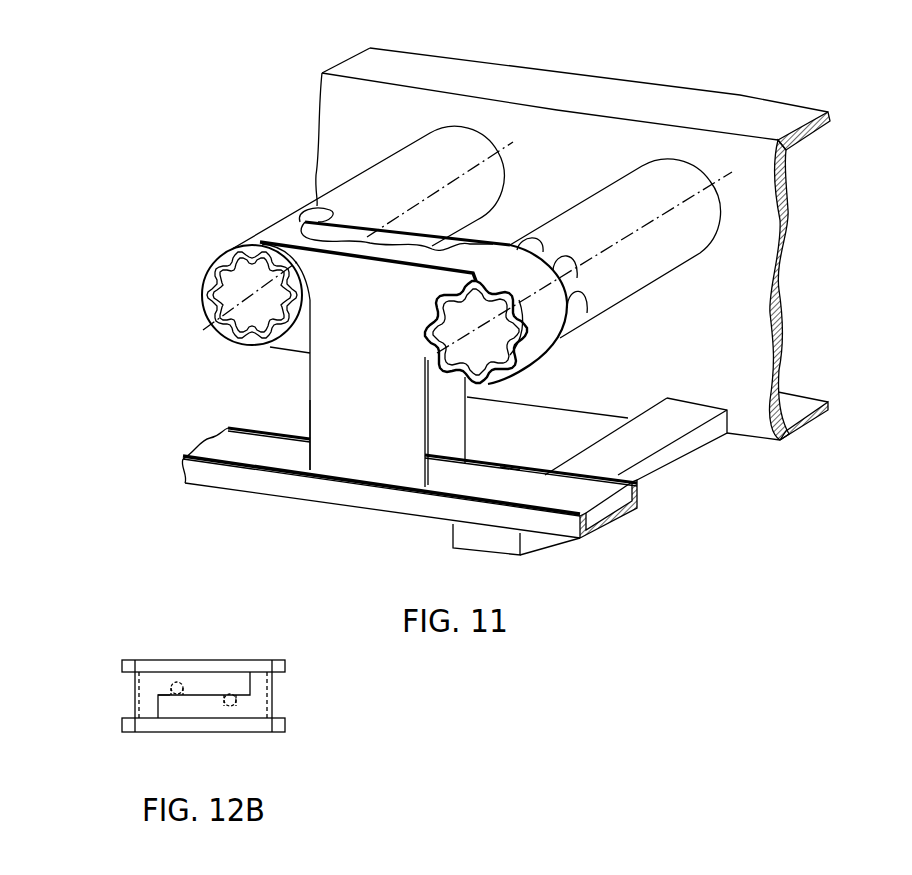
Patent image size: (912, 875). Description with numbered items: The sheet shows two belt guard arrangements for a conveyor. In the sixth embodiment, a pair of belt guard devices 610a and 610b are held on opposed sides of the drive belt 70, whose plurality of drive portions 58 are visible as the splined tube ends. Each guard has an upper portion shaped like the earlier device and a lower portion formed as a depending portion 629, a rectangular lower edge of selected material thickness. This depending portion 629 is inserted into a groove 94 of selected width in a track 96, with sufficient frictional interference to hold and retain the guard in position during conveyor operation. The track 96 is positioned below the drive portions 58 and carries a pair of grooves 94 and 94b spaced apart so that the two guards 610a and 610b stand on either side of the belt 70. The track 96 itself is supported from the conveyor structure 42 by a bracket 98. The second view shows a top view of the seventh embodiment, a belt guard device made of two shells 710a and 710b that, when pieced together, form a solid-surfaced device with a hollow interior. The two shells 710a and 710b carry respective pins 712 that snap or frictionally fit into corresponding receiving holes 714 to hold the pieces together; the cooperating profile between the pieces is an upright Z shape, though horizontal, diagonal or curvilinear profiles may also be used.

In FIG. 11, the conveyor structure 42 is at (738, 336).
In FIG. 11, the drive portions 58 is at (250, 247).
In FIG. 11, the drive belt 70 is at (483, 257).
In FIG. 11, the belt guard device 610a is at (352, 285).
In FIG. 11, the belt guard device 610b is at (414, 214).
In FIG. 11, the depending portion 629 is at (377, 457).
In FIG. 11, the groove 94 is at (468, 485).
In FIG. 11, the groove 94b is at (500, 467).
In FIG. 11, the track 96 is at (497, 518).
In FIG. 11, the bracket 98 is at (685, 448).
In FIG. 12B, the shell 710a is at (207, 710).
In FIG. 12B, the shell 710b is at (155, 676).
In FIG. 12B, the pins 712 is at (185, 687).
In FIG. 12B, the receiving holes 714 is at (162, 688).